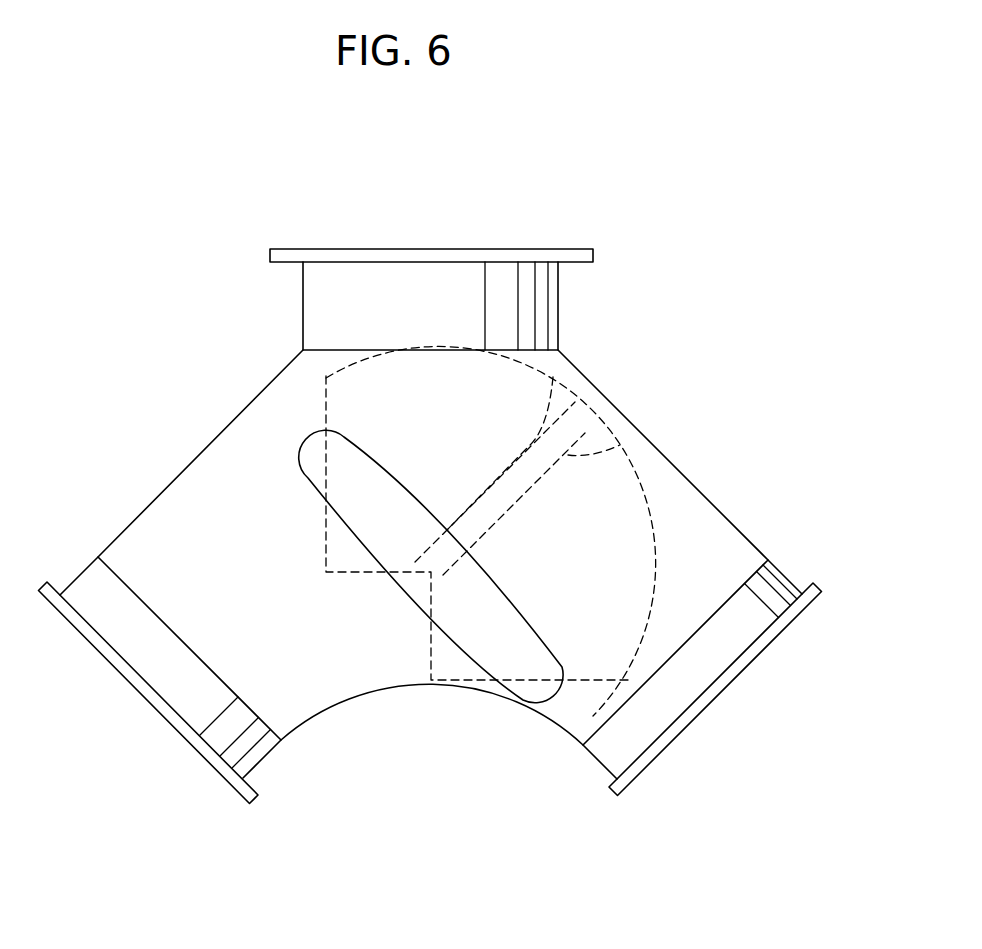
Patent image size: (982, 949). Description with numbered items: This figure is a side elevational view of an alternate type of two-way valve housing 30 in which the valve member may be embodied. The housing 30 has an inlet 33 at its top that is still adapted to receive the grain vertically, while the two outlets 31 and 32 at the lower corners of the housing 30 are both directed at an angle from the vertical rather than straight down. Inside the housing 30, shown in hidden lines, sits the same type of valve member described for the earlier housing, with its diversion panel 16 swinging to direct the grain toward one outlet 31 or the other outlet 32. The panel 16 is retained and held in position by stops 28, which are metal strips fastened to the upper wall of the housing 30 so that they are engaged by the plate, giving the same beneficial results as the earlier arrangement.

The diversion panel 16 is at (566, 357).
The stops 28 is at (218, 450).
The housing 30 is at (431, 566).
The outlet 31 is at (727, 683).
The outlet 32 is at (152, 705).
The inlet 33 is at (517, 250).